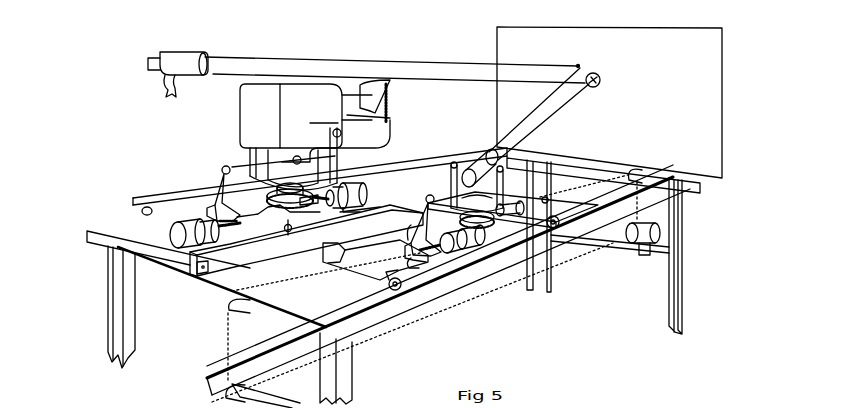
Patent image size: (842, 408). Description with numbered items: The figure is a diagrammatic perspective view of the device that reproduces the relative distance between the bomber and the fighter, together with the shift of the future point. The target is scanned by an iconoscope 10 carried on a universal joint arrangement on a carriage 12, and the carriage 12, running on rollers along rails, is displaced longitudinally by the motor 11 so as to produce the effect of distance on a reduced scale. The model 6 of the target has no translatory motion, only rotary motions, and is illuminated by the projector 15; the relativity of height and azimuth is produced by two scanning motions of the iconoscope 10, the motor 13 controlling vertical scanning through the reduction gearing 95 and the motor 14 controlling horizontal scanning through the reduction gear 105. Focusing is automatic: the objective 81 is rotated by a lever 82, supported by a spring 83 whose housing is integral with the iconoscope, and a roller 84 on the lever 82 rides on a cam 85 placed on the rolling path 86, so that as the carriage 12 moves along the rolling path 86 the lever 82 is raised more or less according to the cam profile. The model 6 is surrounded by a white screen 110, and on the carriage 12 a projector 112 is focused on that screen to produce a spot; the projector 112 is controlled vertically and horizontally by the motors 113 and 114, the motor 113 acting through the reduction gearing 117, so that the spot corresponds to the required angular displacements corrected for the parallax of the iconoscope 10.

The model 6 is at (602, 75).
The iconoscope 10 is at (252, 120).
The motor 11 is at (643, 248).
The carriage 12 is at (363, 268).
The motor 13 is at (177, 238).
The motor 14 is at (360, 192).
The projector 15 is at (182, 62).
The objective 81 is at (392, 101).
The lever 82 is at (388, 88).
The spring 83 is at (392, 113).
The roller 84 is at (284, 227).
The cam 85 is at (258, 247).
The rolling path 86 is at (133, 230).
The reduction gearing 95 is at (213, 197).
The reduction gear 105 is at (313, 200).
The white screen 110 is at (706, 160).
The projector 112 is at (468, 167).
The motor 113 is at (476, 243).
The motor 114 is at (560, 200).
The reduction gearing 117 is at (433, 258).